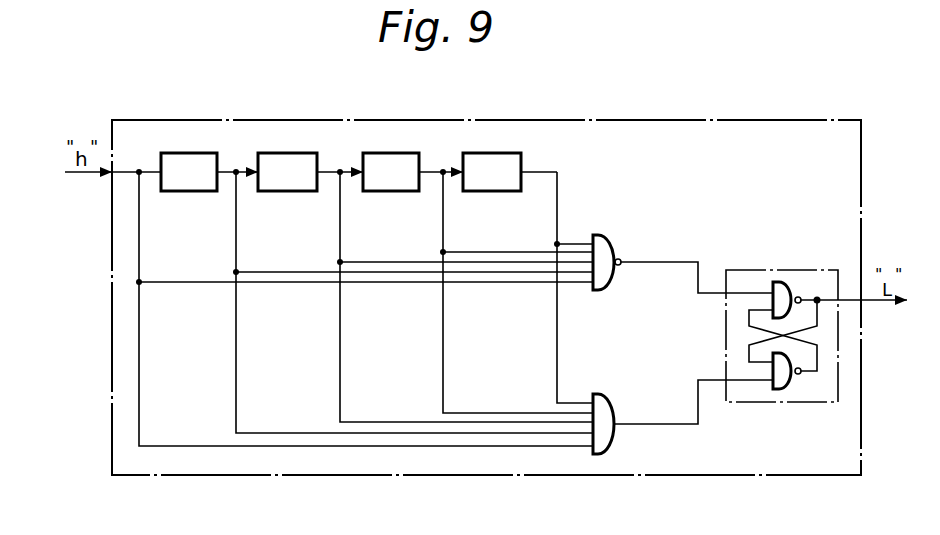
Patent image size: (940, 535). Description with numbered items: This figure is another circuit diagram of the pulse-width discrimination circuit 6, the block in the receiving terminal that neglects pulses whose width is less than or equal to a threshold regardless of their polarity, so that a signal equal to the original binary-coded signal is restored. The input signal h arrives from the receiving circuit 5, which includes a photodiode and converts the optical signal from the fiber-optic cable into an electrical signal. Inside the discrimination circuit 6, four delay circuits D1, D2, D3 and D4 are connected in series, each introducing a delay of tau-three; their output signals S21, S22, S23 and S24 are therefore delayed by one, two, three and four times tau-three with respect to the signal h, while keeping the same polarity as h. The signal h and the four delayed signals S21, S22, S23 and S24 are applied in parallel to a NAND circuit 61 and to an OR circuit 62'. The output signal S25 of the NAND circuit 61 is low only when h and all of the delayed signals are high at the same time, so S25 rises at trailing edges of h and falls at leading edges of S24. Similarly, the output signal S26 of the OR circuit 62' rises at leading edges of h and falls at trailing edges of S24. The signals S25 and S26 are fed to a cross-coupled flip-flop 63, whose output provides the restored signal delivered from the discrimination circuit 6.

The receiving circuit 5 is at (98, 173).
The pulse-width discrimination circuit 6 is at (752, 120).
The delay circuit D1 is at (188, 153).
The delay circuit D2 is at (300, 153).
The delay circuit D3 is at (404, 153).
The delay circuit D4 is at (506, 153).
The output signal of delay circuit D1 S21 is at (413, 302).
The output signal of delay circuit D2 S22 is at (465, 297).
The output signal of delay circuit D3 S23 is at (516, 292).
The output signal of delay circuit D4 S24 is at (573, 287).
The output signal of NAND circuit 61 S25 is at (697, 284).
The output signal of OR circuit 62' S26 is at (693, 402).
The NAND circuit 61 is at (612, 246).
The OR circuit 62' is at (624, 413).
The flip-flop circuit 63 is at (804, 270).